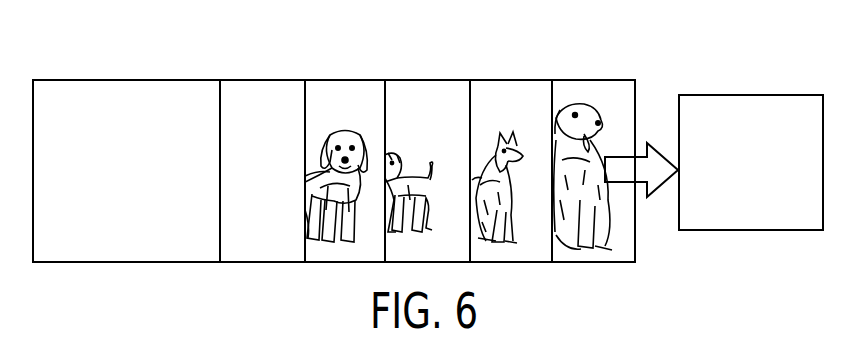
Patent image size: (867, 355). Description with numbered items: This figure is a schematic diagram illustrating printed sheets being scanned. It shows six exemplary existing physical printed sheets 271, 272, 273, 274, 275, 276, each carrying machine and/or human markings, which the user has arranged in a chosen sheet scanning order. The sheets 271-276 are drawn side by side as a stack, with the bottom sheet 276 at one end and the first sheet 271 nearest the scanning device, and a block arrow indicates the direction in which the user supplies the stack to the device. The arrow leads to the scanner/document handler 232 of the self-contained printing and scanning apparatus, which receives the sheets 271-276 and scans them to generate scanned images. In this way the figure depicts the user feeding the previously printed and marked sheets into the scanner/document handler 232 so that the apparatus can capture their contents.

The scanner/document handler 232 is at (754, 92).
The printed sheet 271 is at (602, 95).
The printed sheet 272 is at (512, 95).
The printed sheet 273 is at (428, 95).
The printed sheet 274 is at (343, 95).
The printed sheet 275 is at (260, 95).
The printed sheet 276 is at (163, 95).